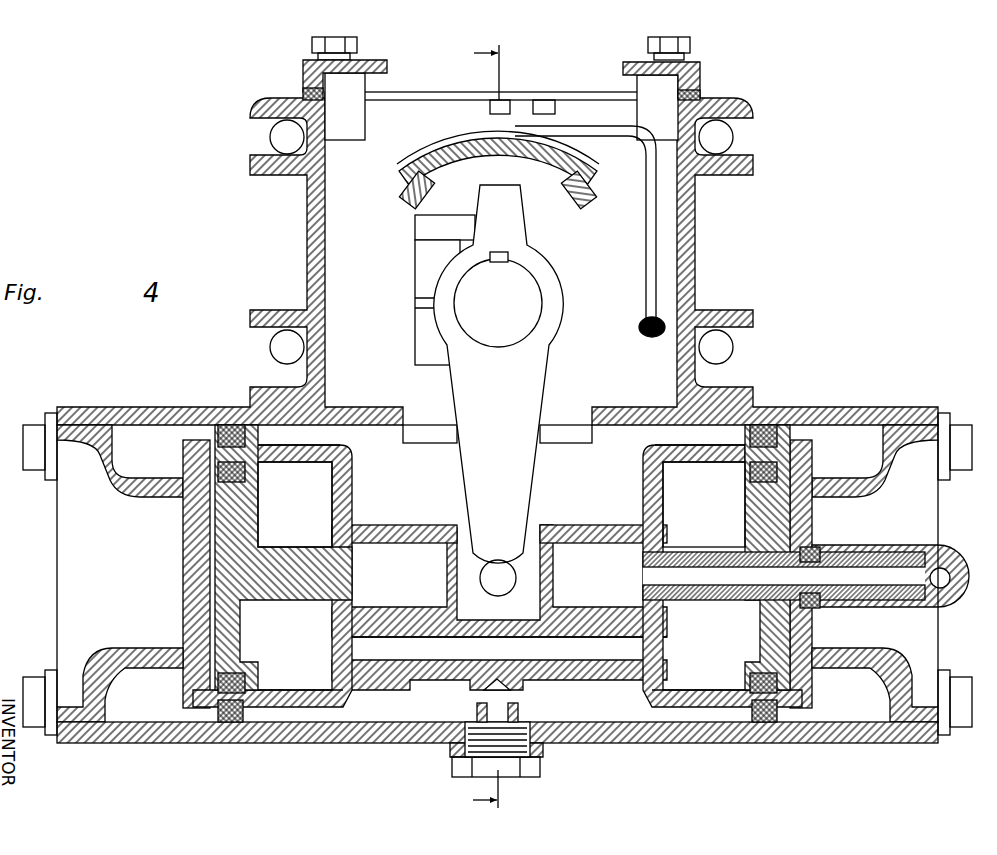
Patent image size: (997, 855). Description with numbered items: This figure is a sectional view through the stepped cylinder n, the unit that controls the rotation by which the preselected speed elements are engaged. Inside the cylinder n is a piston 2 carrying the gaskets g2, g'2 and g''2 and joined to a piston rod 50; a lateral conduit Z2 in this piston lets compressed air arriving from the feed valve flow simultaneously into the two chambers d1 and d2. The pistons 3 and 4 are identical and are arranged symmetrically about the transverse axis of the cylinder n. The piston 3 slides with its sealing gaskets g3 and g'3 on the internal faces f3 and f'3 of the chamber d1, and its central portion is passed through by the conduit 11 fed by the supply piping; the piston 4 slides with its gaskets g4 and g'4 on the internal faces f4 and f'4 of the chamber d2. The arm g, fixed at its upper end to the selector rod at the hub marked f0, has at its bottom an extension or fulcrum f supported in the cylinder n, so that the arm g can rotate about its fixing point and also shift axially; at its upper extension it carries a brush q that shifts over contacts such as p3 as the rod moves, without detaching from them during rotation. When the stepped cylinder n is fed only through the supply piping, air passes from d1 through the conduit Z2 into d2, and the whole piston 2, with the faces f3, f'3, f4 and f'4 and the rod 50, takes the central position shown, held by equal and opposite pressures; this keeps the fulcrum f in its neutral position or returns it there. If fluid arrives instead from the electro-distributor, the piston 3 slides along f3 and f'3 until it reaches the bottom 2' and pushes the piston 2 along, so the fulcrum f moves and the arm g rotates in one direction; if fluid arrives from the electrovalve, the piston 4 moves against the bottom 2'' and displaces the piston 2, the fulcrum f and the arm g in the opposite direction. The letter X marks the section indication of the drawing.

The stepped cylinder n is at (125, 745).
The piston 2 is at (499, 615).
The bottom 2' is at (711, 576).
The bottom 2'' is at (286, 576).
The piston 3 is at (752, 628).
The piston 4 is at (242, 627).
The conduit 11 is at (648, 578).
The piston rod 50 is at (405, 525).
The chamber d1 is at (704, 504).
The chamber d2 is at (295, 504).
The fulcrum f is at (498, 578).
The lever shaft f0 is at (498, 299).
The internal face f3 is at (660, 452).
The internal face f4 is at (345, 452).
The internal face f'3 is at (698, 730).
The internal face f'4 is at (300, 731).
The arm g is at (499, 374).
The gasket g2 is at (778, 428).
The sealing gasket g3 is at (790, 470).
The gasket g4 is at (218, 470).
The gasket g'2 is at (768, 735).
The sealing gasket g'3 is at (793, 623).
The gasket g'4 is at (200, 686).
The gasket g''2 is at (213, 574).
The contact p3 is at (566, 182).
The brush q is at (488, 183).
The lateral conduit Z2 is at (499, 647).
The section line X is at (486, 426).